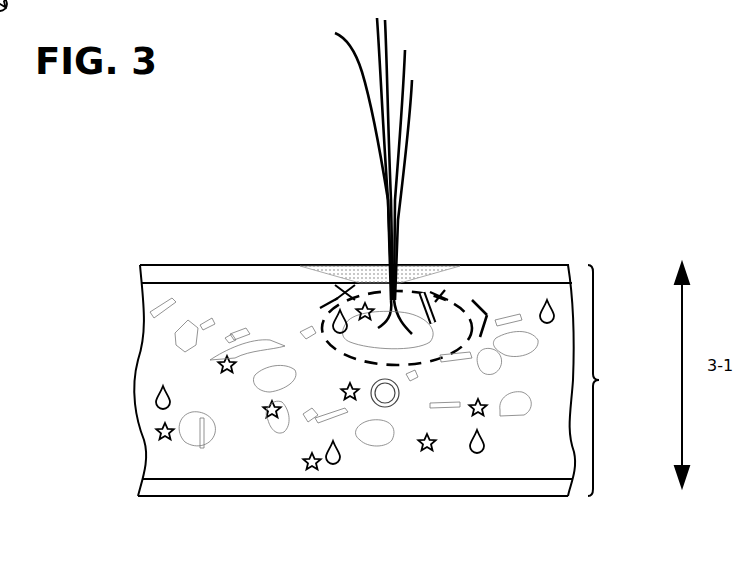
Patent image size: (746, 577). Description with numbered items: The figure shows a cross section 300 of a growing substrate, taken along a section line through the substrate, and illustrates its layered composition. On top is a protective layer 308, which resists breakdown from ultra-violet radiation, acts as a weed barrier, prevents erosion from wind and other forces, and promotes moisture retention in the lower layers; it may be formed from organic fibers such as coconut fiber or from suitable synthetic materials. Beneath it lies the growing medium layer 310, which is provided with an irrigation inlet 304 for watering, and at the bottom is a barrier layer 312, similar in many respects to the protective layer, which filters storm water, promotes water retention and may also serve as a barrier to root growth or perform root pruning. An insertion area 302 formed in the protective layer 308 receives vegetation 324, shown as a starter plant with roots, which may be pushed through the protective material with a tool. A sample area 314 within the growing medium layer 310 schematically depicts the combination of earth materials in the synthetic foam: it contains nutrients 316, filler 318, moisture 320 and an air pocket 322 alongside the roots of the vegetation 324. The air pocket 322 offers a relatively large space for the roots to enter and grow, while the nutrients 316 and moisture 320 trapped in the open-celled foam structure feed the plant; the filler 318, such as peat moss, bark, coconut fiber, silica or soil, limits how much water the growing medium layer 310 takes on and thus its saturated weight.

The cross section 300 is at (390, 380).
The insertion area 302 is at (372, 268).
The irrigation inlet 304 is at (385, 407).
The protective layer 308 is at (152, 265).
The growing medium layer 310 is at (140, 345).
The barrier layer 312 is at (197, 496).
The sample area 314 is at (487, 315).
The nutrients 316 is at (345, 292).
The filler 318 is at (443, 287).
The moisture 320 is at (337, 327).
The air pocket 322 is at (400, 322).
The vegetation 324 is at (353, 48).